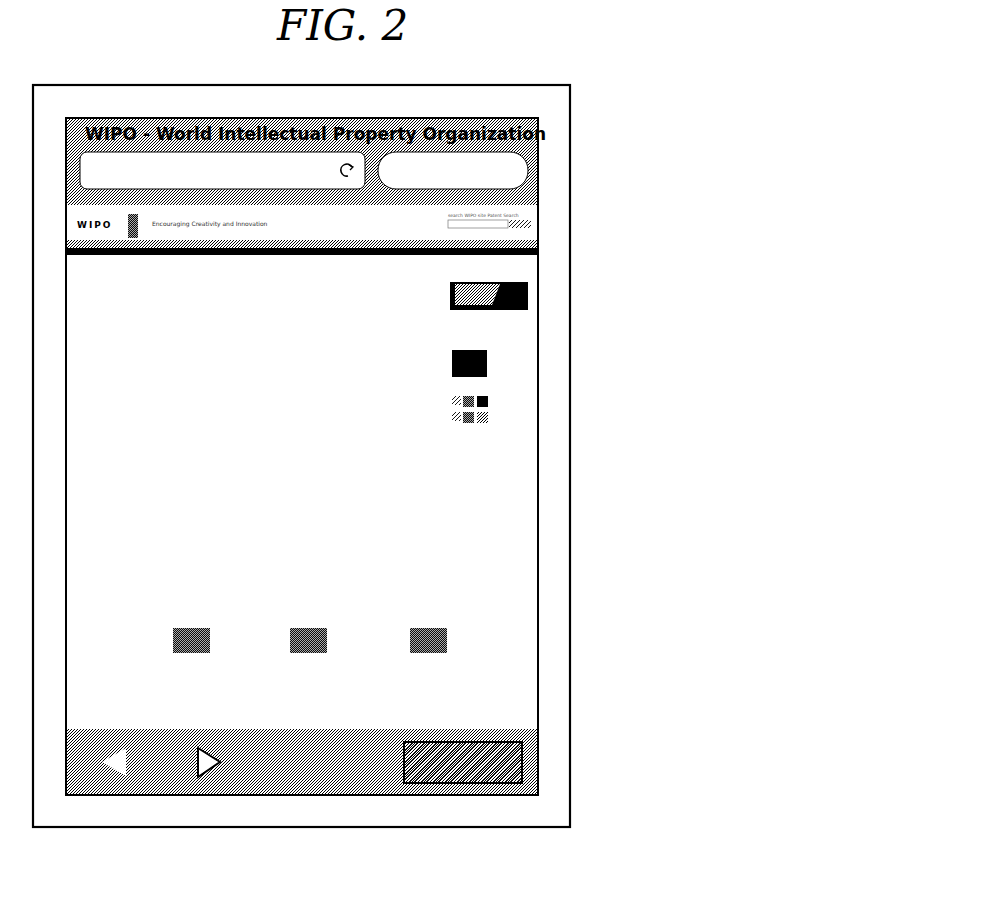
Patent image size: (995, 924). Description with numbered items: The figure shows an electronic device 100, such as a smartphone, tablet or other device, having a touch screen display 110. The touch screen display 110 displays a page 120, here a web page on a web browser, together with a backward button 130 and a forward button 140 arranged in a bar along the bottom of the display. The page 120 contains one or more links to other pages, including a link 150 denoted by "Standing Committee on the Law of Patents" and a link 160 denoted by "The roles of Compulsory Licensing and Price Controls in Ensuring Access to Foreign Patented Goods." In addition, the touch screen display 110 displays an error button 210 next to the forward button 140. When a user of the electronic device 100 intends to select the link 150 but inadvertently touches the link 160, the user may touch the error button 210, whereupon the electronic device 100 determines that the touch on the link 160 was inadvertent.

The electronic device 100 is at (570, 113).
The touch screen display 110 is at (532, 165).
The page 120 is at (533, 342).
The backward button 130 is at (108, 766).
The forward button 140 is at (210, 772).
The link 150 is at (343, 538).
The link 160 is at (408, 565).
The error button 210 is at (473, 783).